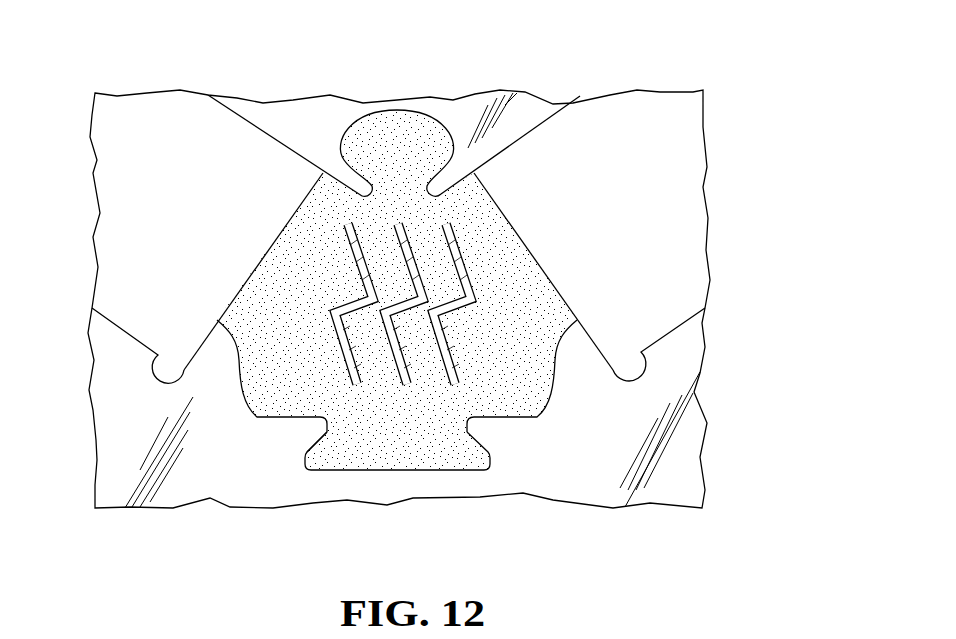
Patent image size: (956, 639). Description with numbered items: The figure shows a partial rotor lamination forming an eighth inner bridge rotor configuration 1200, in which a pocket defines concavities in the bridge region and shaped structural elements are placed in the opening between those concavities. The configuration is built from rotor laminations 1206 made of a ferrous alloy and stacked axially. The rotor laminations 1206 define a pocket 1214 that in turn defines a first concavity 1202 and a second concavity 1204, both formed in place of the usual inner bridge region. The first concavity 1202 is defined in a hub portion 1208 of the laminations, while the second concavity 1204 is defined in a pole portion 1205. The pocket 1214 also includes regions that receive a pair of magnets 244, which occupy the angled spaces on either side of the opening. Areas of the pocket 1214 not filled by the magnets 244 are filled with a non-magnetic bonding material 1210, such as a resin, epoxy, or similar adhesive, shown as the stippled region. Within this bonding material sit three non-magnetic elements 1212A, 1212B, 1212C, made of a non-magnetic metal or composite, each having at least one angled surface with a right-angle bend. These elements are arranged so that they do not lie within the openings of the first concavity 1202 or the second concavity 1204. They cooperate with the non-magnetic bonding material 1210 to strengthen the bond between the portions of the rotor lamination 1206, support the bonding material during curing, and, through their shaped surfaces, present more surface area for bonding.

The eighth inner bridge rotor configuration 1200 is at (722, 58).
The magnets 244 is at (150, 202).
The second concavity 1204 is at (402, 136).
The pole portion 1205 is at (535, 108).
The rotor laminations 1206 is at (683, 467).
The hub portion 1208 is at (391, 500).
The non-magnetic bonding material 1210 is at (538, 300).
The first concavity 1202 is at (413, 450).
The pocket 1214 is at (313, 441).
The non-magnetic element 1212A is at (345, 268).
The non-magnetic element 1212B is at (392, 230).
The non-magnetic element 1212C is at (463, 262).